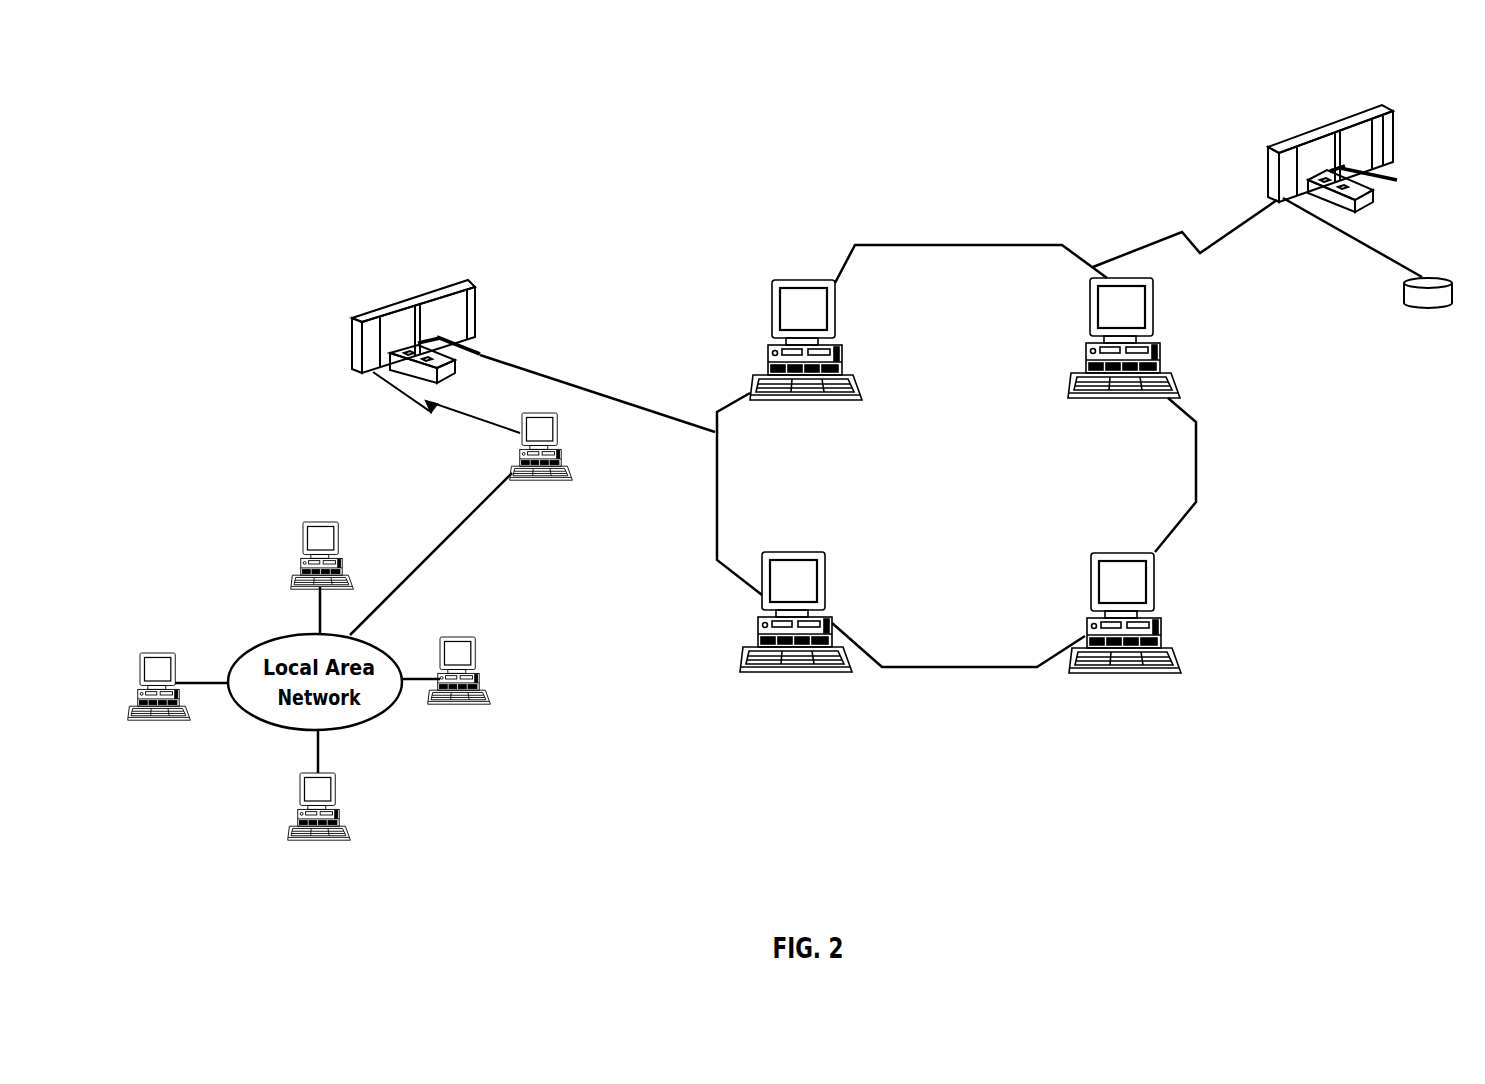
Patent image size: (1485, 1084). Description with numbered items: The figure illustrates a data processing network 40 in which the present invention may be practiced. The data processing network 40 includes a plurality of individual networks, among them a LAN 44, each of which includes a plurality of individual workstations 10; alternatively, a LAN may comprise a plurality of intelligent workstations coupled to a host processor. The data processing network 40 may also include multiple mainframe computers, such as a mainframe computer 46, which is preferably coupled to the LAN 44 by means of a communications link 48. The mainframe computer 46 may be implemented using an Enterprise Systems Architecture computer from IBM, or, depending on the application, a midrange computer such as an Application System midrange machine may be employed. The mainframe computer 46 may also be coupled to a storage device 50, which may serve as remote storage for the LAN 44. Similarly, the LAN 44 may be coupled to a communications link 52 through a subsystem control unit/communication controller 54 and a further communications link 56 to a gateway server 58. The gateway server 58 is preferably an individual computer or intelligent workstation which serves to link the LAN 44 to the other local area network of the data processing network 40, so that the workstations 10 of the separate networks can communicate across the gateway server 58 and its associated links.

The workstation 10 is at (788, 281).
The data processing network 40 is at (975, 232).
The LAN 44 is at (956, 456).
The mainframe computer 46 is at (1340, 125).
The communications link 48 is at (1180, 233).
The storage device 50 is at (1438, 277).
The communications link 52 is at (598, 393).
The subsystem control unit/communication controller 54 is at (471, 282).
The communications link 56 is at (388, 390).
The gateway server 58 is at (533, 415).